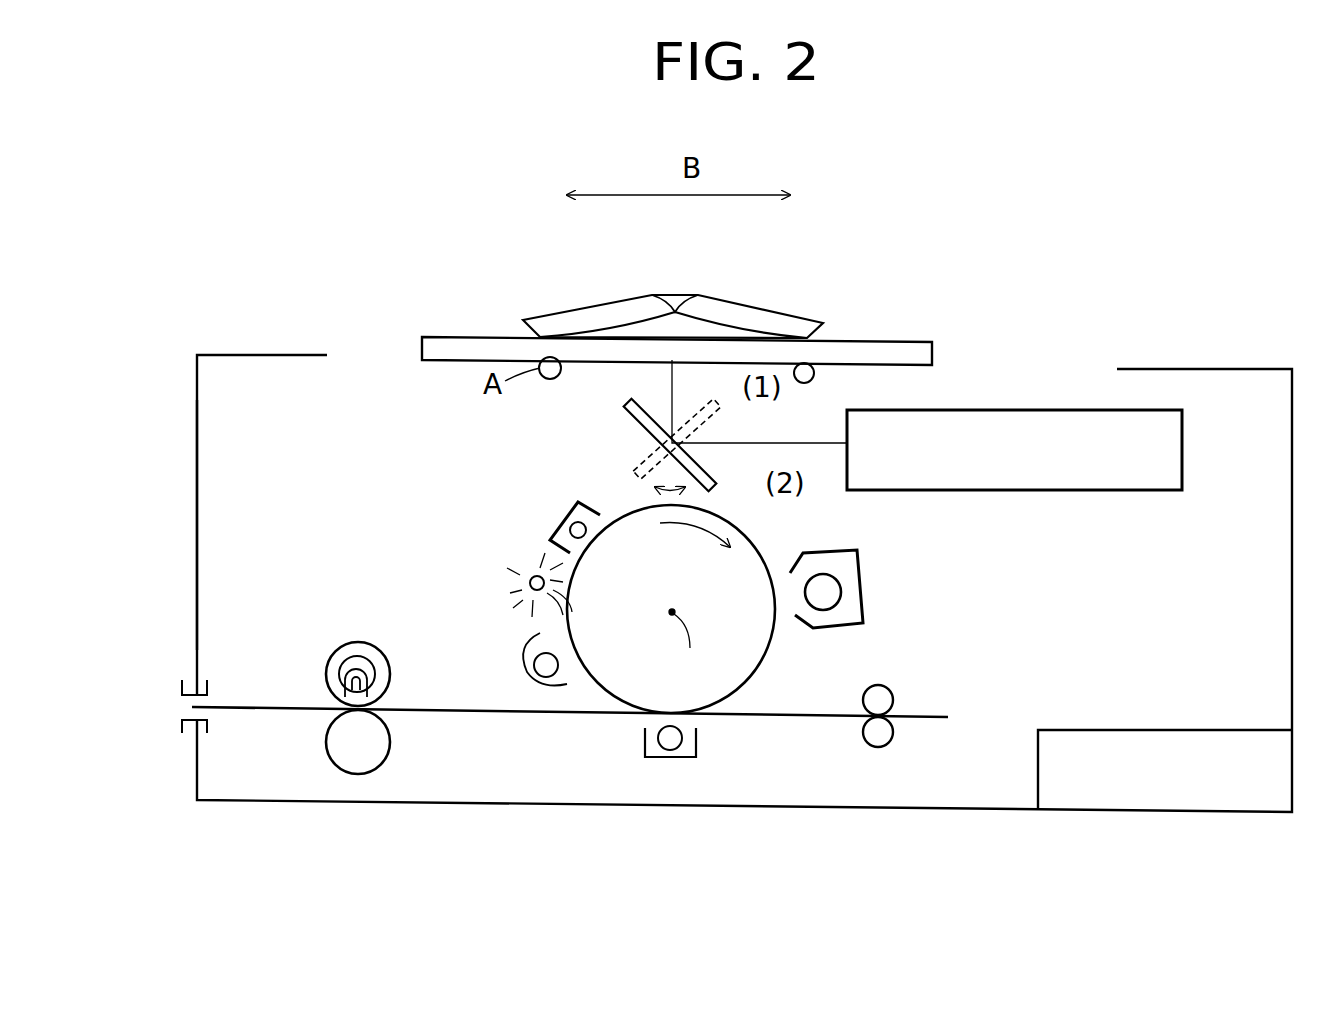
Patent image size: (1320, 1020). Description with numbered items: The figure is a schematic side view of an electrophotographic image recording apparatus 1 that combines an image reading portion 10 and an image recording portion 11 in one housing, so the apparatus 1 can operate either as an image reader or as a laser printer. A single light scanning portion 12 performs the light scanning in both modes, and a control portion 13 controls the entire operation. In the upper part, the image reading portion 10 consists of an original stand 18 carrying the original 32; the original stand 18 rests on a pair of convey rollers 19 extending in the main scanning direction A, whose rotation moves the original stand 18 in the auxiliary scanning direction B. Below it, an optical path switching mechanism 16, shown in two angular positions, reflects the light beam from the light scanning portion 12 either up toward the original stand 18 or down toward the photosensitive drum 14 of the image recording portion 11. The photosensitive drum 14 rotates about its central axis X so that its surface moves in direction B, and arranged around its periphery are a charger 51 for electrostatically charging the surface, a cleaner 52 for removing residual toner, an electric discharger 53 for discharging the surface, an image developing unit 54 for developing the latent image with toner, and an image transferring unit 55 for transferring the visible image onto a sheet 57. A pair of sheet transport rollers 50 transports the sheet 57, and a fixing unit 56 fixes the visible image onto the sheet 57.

The electrophotographic image recording apparatus 1 is at (1138, 293).
The image reading portion 10 is at (737, 583).
The image recording portion 11 is at (245, 525).
The light scanning portion 12 is at (1091, 462).
The control portion 13 is at (1079, 745).
The photosensitive drum 14 is at (701, 605).
The optical path switching mechanism 16 is at (646, 427).
The original stand 18 is at (897, 342).
The convey rollers 19 is at (553, 380).
The original 32 is at (743, 312).
The sheet transport rollers 50 is at (893, 694).
The charger 51 is at (562, 522).
The cleaner 52 is at (524, 581).
The electric discharger 53 is at (528, 646).
The image developing unit 54 is at (863, 583).
The image transferring unit 55 is at (678, 758).
The fixing unit 56 is at (348, 640).
The sheet 57 is at (804, 722).